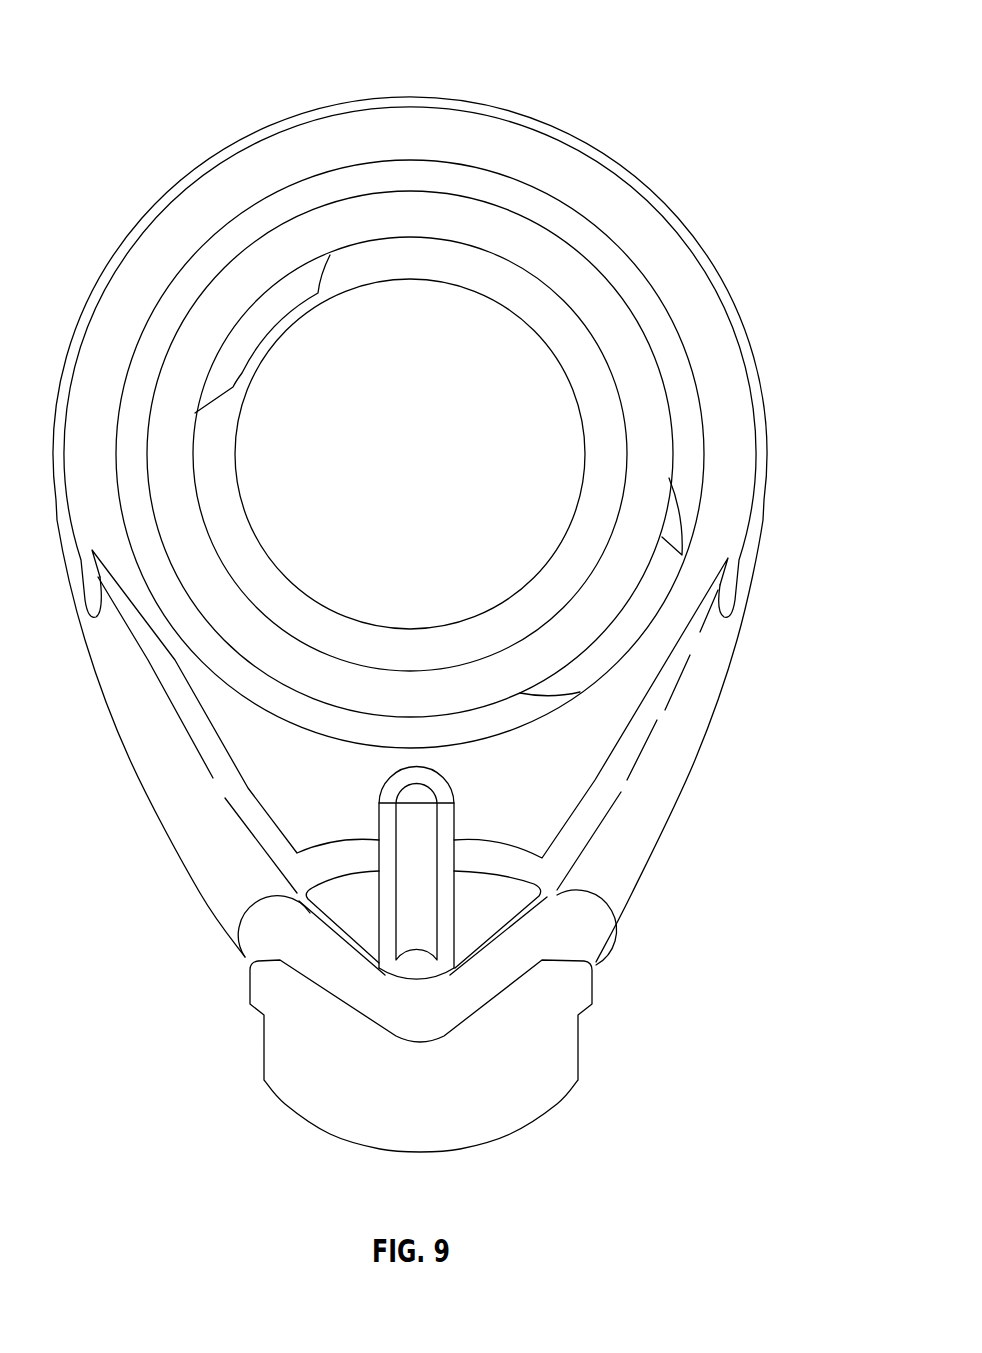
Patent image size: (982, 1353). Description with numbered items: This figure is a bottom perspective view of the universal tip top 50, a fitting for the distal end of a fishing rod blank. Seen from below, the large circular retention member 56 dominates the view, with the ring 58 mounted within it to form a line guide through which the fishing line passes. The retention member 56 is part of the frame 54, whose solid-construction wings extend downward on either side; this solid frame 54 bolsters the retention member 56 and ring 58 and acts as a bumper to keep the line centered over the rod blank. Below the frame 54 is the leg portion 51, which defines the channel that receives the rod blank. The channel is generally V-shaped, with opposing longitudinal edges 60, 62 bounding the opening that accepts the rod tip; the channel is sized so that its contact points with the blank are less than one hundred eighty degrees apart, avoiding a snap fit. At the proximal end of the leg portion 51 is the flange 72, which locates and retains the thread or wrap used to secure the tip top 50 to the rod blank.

The universal tip top 50 is at (766, 80).
The leg portion 51 is at (335, 952).
The frame 54 is at (130, 671).
The circular retention member 56 is at (213, 200).
The ring 58 is at (400, 212).
The longitudinal edge 60 is at (272, 916).
The longitudinal edge 62 is at (595, 925).
The flange 72 is at (532, 1073).